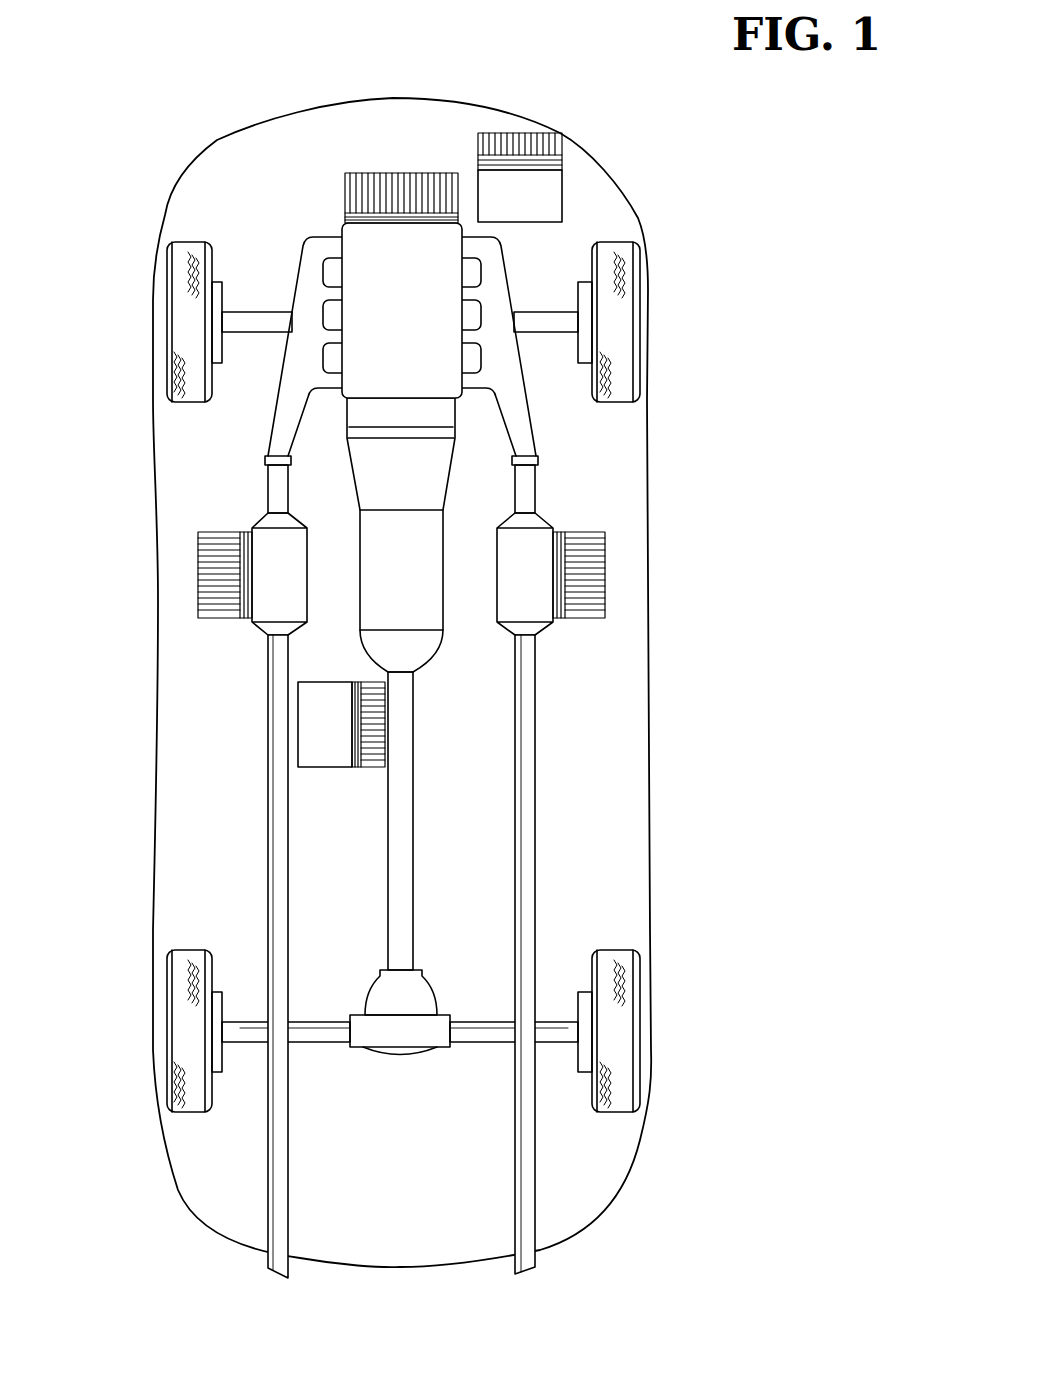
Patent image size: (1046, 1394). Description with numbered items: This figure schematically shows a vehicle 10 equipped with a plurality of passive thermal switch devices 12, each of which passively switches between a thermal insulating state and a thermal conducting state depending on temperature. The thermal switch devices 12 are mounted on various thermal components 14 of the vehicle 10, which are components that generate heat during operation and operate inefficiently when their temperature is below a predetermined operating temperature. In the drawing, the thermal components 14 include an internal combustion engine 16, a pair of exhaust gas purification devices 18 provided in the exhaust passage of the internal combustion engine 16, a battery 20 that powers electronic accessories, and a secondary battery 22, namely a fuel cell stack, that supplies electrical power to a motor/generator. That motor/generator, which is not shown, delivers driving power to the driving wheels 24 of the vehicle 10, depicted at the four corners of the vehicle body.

The vehicle 10 is at (806, 237).
The passive thermal switch device 12 is at (328, 174).
The thermal component 14 is at (387, 724).
The internal combustion engine 16 is at (327, 223).
The exhaust gas purification device 18 is at (245, 512).
The battery 20 is at (579, 186).
The secondary battery 22 is at (325, 782).
The driving wheel 24 is at (617, 322).